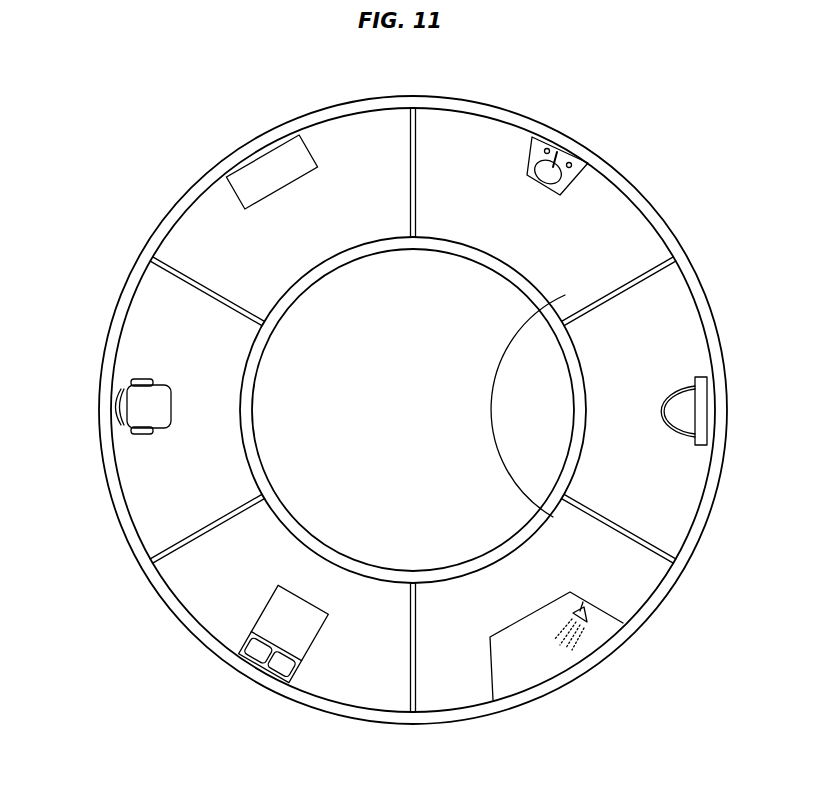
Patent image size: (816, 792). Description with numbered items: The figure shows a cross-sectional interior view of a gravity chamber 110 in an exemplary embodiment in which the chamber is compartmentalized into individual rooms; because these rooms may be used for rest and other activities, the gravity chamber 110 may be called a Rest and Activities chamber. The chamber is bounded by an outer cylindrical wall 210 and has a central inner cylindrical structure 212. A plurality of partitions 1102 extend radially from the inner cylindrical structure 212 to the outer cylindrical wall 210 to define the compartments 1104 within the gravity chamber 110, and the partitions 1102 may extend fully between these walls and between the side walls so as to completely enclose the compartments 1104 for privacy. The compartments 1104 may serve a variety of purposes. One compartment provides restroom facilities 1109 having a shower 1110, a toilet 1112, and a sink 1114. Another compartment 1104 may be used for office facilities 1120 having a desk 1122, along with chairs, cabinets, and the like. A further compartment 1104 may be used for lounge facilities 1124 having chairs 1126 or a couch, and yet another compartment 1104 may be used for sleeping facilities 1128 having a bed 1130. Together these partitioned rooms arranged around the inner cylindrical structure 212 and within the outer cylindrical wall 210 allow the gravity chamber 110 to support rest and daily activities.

The gravity chamber 110 is at (650, 69).
The outer cylindrical wall 210 is at (463, 98).
The inner cylindrical structure 212 is at (453, 253).
The partitions 1102 is at (408, 203).
The compartments 1104 is at (364, 124).
The restroom facilities 1109 is at (592, 383).
The shower 1110 is at (540, 665).
The toilet 1112 is at (698, 408).
The sink 1114 is at (555, 136).
The office facilities 1120 is at (287, 260).
The desk 1122 is at (252, 173).
The lounge facilities 1124 is at (218, 416).
The chairs 1126 is at (122, 408).
The sleeping facilities 1128 is at (335, 587).
The bed 1130 is at (287, 668).